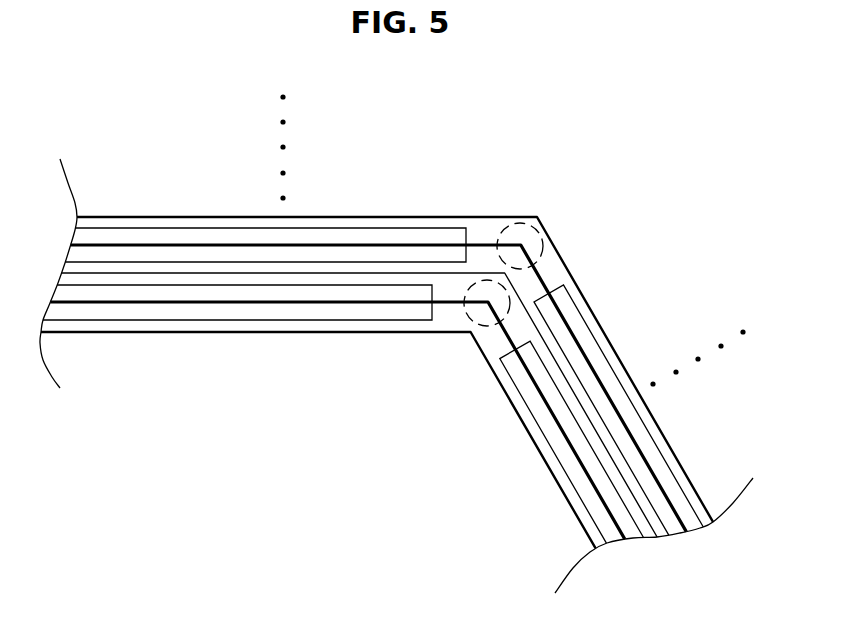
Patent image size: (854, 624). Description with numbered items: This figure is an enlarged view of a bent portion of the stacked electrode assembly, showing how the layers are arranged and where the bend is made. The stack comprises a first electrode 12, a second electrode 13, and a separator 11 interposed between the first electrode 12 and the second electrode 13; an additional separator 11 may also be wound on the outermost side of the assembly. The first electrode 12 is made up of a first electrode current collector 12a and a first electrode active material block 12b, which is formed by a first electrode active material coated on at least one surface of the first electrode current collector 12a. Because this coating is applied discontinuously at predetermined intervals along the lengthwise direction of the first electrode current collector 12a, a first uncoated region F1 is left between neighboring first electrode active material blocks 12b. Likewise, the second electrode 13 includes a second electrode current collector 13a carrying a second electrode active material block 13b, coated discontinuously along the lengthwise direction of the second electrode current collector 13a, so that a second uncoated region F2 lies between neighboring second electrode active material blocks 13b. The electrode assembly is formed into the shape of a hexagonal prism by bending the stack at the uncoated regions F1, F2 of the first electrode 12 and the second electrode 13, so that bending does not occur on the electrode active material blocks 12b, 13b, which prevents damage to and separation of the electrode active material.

The separator 11 is at (421, 215).
The first electrode 12 is at (343, 414).
The first electrode current collector 12a is at (135, 305).
The first electrode active material block 12b is at (118, 388).
The second electrode 13 is at (384, 325).
The second electrode current collector 13a is at (137, 244).
The second electrode active material block 13b is at (118, 163).
The first uncoated region F1 is at (487, 328).
The second uncoated region F2 is at (541, 220).